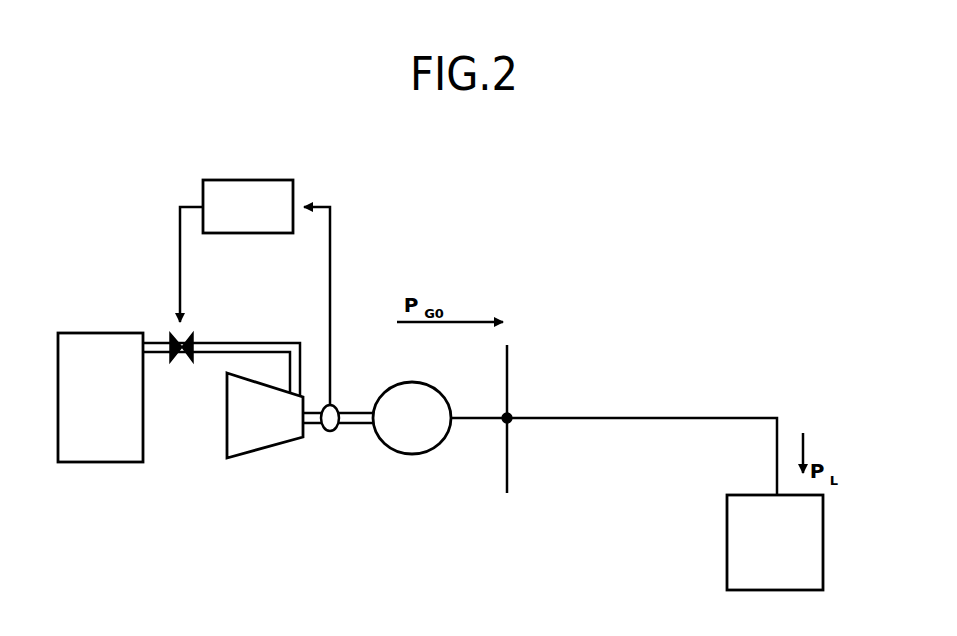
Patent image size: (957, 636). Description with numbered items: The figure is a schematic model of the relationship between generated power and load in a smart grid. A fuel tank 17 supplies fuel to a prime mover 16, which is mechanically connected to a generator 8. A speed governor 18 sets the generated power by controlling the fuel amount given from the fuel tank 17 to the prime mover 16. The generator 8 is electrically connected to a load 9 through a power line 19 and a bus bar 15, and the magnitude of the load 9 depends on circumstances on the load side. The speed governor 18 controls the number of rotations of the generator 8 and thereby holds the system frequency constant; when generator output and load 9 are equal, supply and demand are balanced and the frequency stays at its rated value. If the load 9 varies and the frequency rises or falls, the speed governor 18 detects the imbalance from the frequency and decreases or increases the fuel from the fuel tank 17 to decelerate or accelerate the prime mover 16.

The generator 8 is at (405, 448).
The load 9 is at (820, 530).
The bus bar 15 is at (505, 493).
The prime mover 16 is at (258, 442).
The fuel tank 17 is at (90, 457).
The speed governor 18 is at (267, 185).
The power line 19 is at (632, 422).